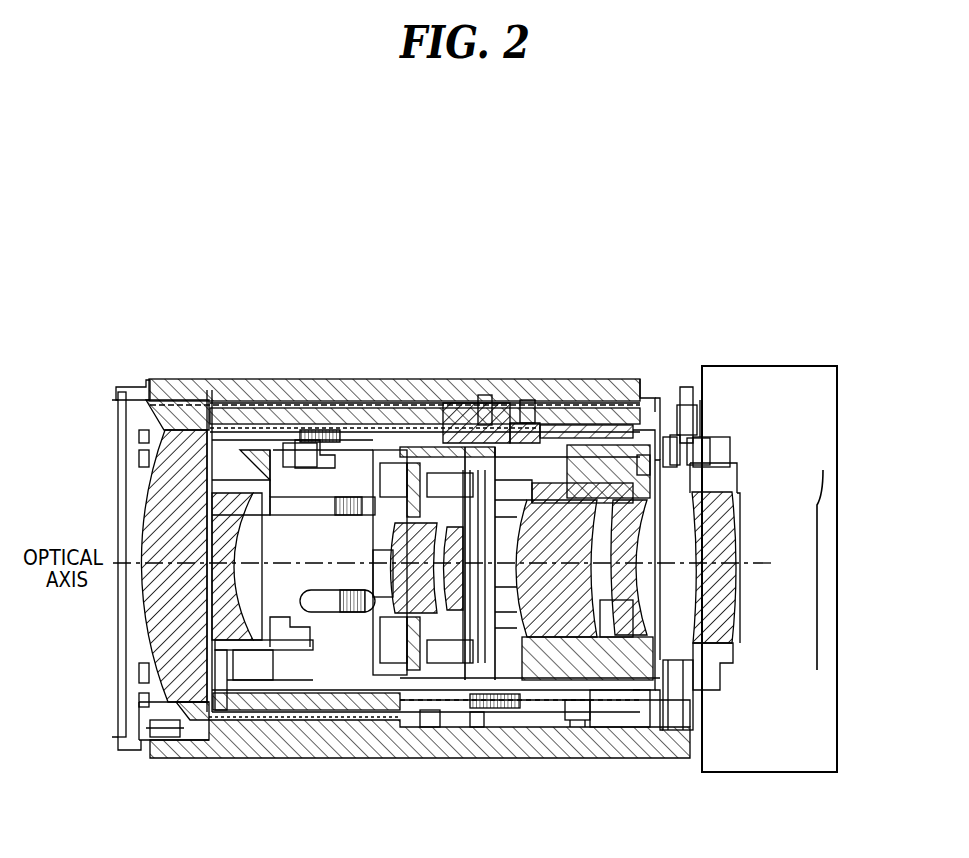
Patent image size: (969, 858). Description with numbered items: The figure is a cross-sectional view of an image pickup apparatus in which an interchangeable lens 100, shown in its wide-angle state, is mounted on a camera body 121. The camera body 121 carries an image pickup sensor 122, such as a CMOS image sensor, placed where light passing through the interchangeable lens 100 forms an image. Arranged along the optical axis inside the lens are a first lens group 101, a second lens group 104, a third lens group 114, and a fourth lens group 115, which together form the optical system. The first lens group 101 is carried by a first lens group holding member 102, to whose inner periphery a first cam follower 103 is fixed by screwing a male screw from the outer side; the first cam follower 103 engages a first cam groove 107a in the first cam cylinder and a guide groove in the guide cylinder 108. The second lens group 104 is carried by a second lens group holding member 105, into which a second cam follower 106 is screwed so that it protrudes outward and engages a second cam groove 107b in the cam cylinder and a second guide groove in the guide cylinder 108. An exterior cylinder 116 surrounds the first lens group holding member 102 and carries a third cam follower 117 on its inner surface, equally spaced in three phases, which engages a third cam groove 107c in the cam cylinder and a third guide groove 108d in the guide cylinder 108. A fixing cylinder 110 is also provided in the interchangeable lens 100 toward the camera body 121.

The interchangeable lens 100 is at (272, 256).
The first lens group 101 is at (208, 430).
The first lens group holding member 102 is at (470, 715).
The first cam follower 103 is at (603, 713).
The second lens group 104 is at (247, 497).
The second lens group holding member 105 is at (345, 447).
The second cam follower 106 is at (327, 437).
The first cam groove 107a is at (578, 717).
The second cam groove 107b is at (307, 452).
The third cam groove 107c is at (527, 418).
The guide cylinder 108 is at (628, 445).
The third guide groove 108d is at (463, 440).
The fixing cylinder 110 is at (680, 395).
The third lens group 114 is at (420, 520).
The fourth lens group 115 is at (553, 533).
The exterior cylinder 116 is at (485, 412).
The third cam follower 117 is at (519, 420).
The camera body 121 is at (742, 400).
The image pickup sensor 122 is at (823, 470).